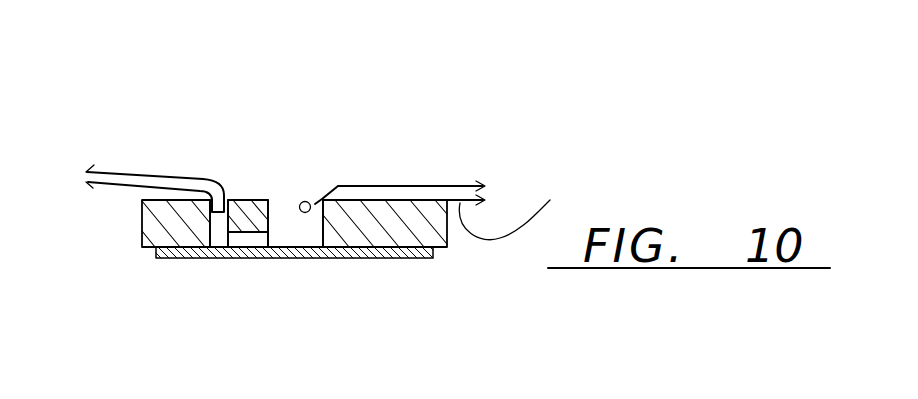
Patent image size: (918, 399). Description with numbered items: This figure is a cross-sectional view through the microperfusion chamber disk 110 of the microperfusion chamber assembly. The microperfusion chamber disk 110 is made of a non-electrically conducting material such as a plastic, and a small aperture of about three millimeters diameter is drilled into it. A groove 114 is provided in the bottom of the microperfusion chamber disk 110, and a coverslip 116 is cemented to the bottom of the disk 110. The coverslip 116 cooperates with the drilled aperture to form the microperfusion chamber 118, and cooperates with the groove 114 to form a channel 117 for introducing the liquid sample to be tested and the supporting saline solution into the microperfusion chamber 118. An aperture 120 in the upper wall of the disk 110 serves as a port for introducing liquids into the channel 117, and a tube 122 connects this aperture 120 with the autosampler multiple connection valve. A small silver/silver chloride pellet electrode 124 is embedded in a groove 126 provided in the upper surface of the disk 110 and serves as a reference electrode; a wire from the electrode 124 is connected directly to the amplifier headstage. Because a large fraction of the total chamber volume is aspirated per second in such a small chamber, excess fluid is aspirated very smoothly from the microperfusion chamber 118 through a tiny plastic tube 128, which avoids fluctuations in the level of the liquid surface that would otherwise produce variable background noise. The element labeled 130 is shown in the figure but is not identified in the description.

The microperfusion chamber disk 110 is at (438, 213).
The groove 114 is at (233, 202).
The coverslip 116 is at (402, 258).
The channel 117 is at (258, 232).
The microperfusion chamber 118 is at (283, 204).
The aperture 120 is at (218, 240).
The tube 122 is at (162, 174).
The pellet electrode 124 is at (308, 198).
The groove 126 is at (293, 214).
The plastic tube 128 is at (550, 200).
The connecting lead 130 is at (491, 0).